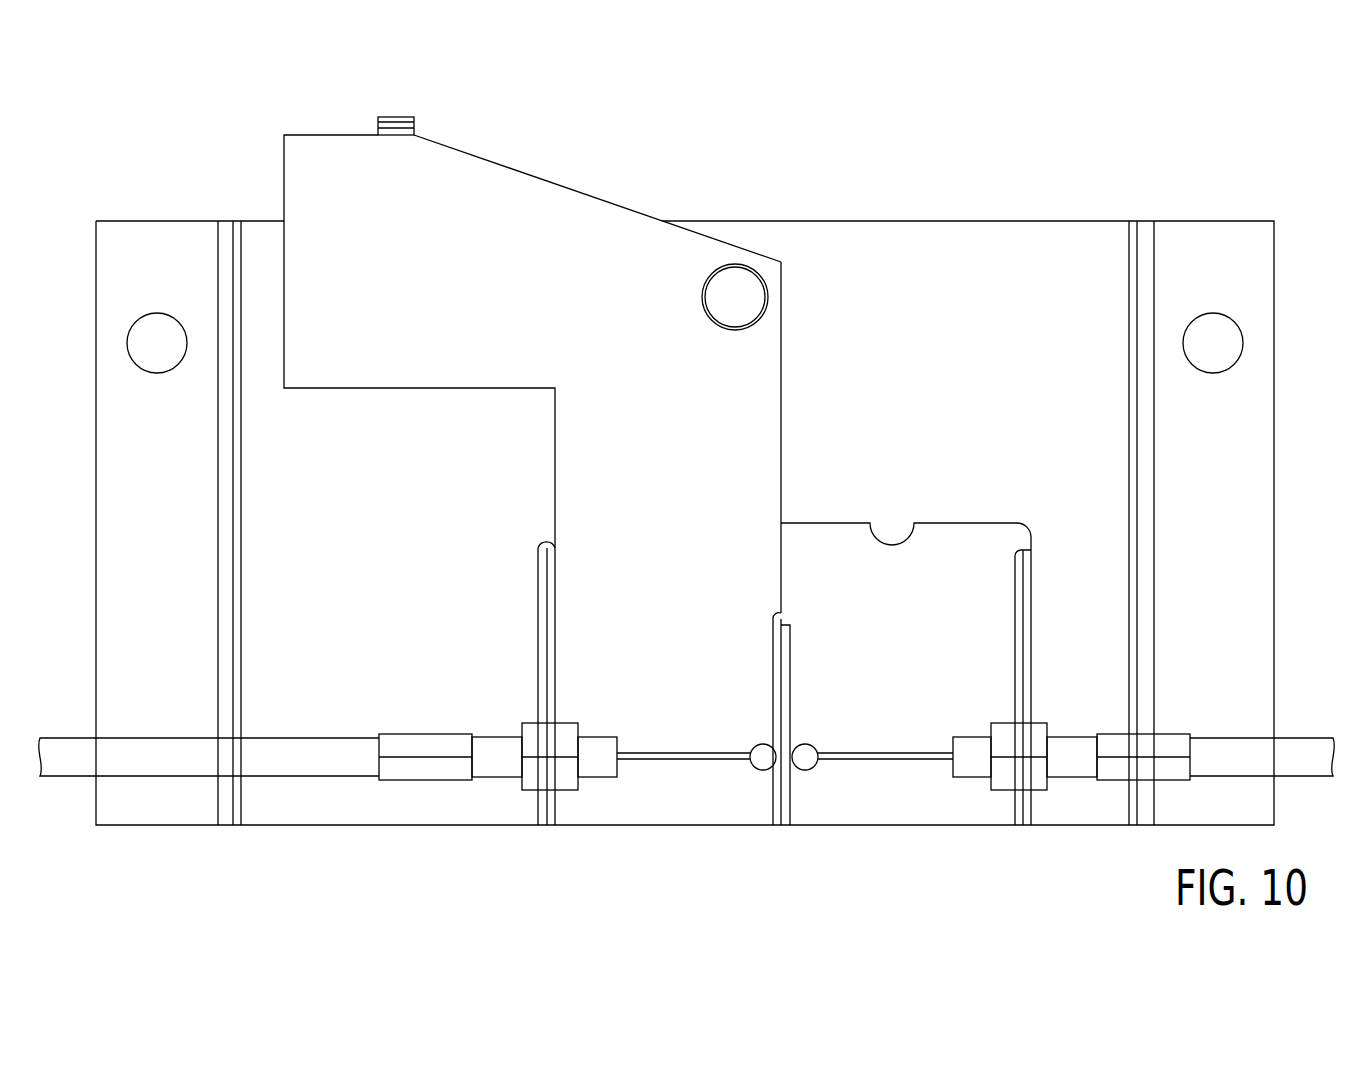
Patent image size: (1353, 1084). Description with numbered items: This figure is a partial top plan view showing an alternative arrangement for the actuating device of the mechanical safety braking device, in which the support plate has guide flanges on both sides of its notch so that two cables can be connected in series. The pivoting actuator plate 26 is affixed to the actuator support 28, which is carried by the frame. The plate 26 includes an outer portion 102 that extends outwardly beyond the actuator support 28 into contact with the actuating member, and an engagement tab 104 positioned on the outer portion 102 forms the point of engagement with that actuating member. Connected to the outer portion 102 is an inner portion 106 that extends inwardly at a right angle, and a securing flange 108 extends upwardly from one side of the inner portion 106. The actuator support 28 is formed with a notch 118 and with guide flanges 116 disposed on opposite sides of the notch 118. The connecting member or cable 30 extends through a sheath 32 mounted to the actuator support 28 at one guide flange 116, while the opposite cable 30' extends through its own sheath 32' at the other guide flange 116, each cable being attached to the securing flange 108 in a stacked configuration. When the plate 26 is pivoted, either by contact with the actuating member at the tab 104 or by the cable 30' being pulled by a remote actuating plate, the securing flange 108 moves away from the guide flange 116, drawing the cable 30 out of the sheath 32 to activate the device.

The pivoting actuator plate 26 is at (605, 182).
The actuator support 28 is at (399, 842).
The connecting member 30 is at (696, 813).
The opposite cable 30' is at (872, 798).
The sheath 32 is at (328, 806).
The sheath 32' is at (1144, 730).
The outer portion 102 is at (453, 172).
The engagement tab 104 is at (395, 115).
The inner portion 106 is at (742, 468).
The securing flange 108 is at (790, 677).
The guide flange 116 is at (538, 607).
The notch 118 is at (900, 540).